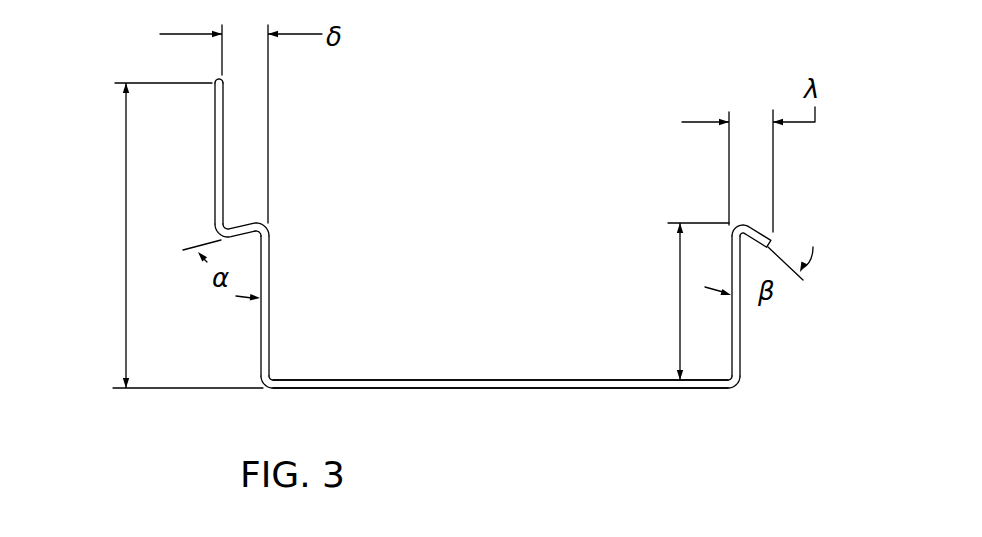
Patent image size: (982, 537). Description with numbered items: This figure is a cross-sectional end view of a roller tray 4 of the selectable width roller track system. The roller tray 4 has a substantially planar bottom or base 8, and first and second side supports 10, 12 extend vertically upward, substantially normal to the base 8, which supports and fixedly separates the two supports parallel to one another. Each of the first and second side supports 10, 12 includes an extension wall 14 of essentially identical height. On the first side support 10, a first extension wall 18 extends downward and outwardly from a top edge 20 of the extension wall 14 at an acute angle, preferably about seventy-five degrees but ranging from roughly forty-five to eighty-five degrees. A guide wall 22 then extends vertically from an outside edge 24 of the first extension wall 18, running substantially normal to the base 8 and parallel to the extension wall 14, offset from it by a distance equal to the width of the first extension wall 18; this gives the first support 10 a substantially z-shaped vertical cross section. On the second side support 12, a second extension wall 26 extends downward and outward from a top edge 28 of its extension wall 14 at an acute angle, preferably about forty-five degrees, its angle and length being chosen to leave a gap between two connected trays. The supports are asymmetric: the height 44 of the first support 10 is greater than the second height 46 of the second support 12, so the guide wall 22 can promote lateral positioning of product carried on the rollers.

The roller tray 4 is at (548, 398).
The base 8 is at (520, 388).
The first side support 10 is at (208, 193).
The second side support 12 is at (757, 243).
The extension wall 14 is at (262, 352).
The first extension wall 18 is at (247, 206).
The top edge 20 is at (263, 222).
The guide wall 22 is at (223, 133).
The outside edge 24 is at (223, 236).
The second extension wall 26 is at (762, 232).
The top edge 28 is at (746, 222).
The height of the first support 44 is at (126, 200).
The second height 46 is at (680, 308).